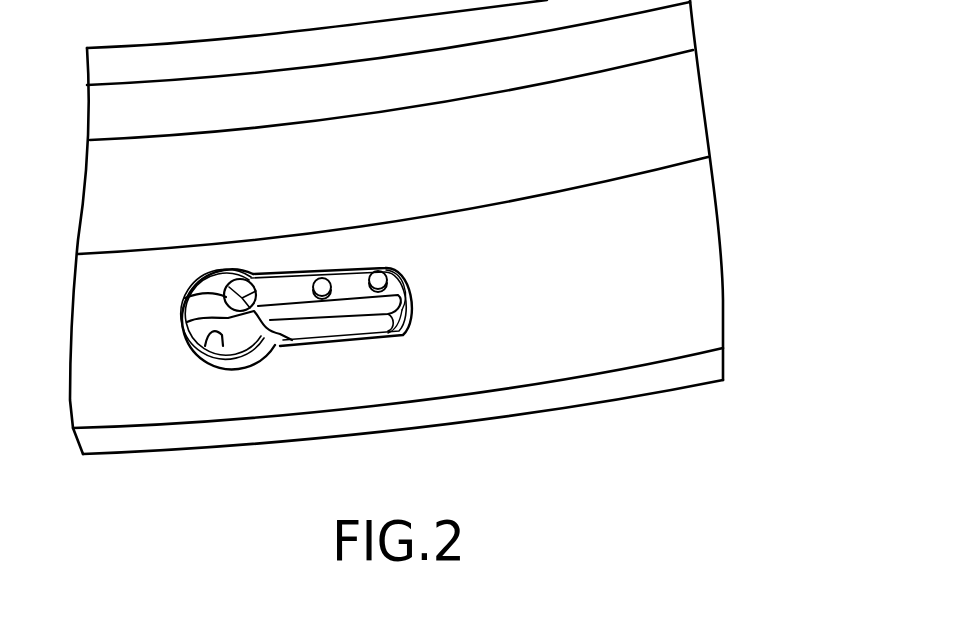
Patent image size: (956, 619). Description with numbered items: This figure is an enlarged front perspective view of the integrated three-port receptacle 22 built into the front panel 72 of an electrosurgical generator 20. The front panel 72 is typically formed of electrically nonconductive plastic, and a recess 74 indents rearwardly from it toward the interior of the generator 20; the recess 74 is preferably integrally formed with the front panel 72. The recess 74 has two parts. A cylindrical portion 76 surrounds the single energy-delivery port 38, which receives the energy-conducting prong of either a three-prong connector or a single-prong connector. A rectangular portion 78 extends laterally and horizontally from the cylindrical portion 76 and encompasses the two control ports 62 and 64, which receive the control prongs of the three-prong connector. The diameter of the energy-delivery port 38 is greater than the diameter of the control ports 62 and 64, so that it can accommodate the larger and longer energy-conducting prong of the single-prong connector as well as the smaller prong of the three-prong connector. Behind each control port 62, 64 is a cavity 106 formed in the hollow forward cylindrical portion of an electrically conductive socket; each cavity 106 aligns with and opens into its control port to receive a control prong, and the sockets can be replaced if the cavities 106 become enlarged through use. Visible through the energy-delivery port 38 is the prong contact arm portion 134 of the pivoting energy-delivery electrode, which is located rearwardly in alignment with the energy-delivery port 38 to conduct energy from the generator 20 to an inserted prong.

The electrosurgical generator 20 is at (445, 227).
The integrated three-port receptacle 22 is at (303, 341).
The energy-delivery port 38 is at (183, 298).
The control port 62 is at (337, 272).
The control port 64 is at (400, 284).
The front panel 72 is at (710, 322).
The recess 74 is at (300, 334).
The cylindrical portion 76 is at (197, 352).
The rectangular portion 78 is at (407, 327).
The cavity 106 is at (313, 276).
The prong contact arm portion 134 is at (194, 333).